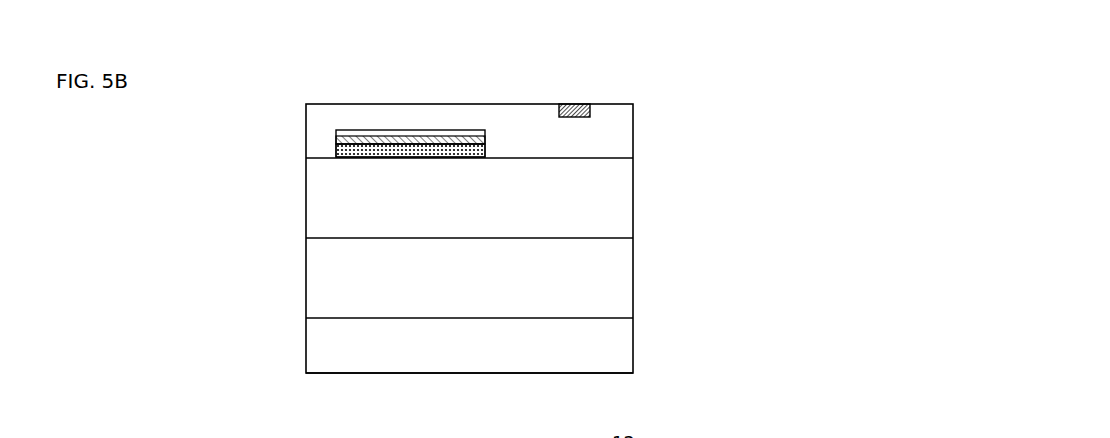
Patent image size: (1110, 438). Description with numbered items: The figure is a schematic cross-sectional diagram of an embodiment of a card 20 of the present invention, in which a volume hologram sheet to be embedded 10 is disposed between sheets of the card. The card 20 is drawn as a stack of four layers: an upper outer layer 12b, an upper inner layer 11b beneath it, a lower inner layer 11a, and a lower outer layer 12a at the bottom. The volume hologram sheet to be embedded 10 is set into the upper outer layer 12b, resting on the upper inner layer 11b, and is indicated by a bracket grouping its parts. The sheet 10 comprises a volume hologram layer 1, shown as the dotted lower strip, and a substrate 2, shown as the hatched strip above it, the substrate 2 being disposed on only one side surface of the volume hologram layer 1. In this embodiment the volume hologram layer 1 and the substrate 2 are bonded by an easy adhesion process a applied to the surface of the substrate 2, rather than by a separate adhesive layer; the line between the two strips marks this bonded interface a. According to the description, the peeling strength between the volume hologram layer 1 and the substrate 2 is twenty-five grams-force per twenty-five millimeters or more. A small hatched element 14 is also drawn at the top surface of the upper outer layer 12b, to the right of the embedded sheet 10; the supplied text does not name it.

The laminated device 20 is at (633, 92).
The volume hologram sheet to be embedded 10 is at (458, 52).
The volume hologram layer 1 is at (448, 152).
The substrate 2 is at (377, 138).
The easy adhesion process a is at (408, 142).
The electrode 14 is at (566, 104).
The upper outer layer 12b is at (613, 132).
The upper inner layer 11b is at (613, 202).
The lower inner layer 11a is at (613, 283).
The lower outer layer 12a is at (613, 347).